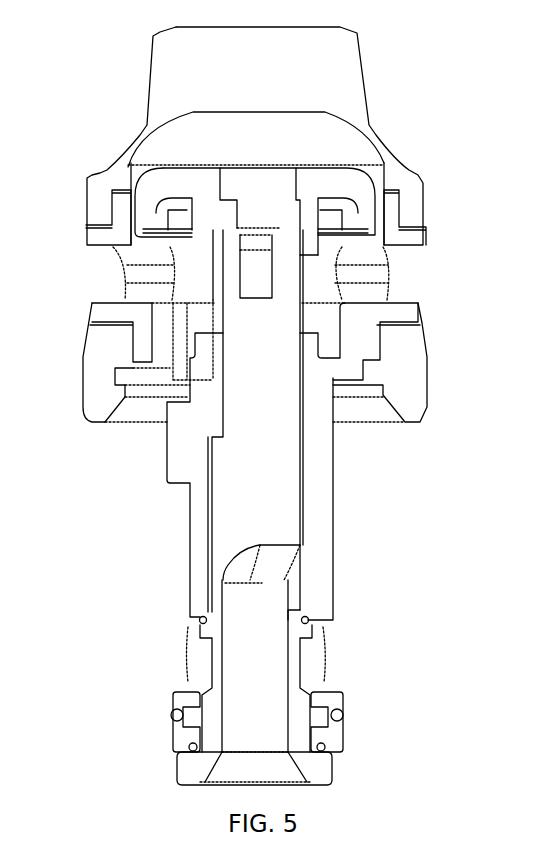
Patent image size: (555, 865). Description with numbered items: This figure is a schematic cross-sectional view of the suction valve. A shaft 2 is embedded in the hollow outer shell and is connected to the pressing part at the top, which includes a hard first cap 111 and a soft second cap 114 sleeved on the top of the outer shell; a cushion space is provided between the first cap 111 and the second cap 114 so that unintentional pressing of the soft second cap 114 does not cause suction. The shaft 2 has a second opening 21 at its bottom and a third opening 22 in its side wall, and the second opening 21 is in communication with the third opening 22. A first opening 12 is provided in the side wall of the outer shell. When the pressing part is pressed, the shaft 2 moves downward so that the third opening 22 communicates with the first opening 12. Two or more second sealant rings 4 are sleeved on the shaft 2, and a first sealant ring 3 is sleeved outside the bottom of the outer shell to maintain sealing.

The first cap 111 is at (163, 185).
The second cap 114 is at (338, 84).
The shaft 2 is at (228, 463).
The third opening 22 is at (290, 578).
The second sealant rings 4 is at (303, 619).
The first sealant ring 3 is at (330, 712).
The first opening 12 is at (332, 655).
The second opening 21 is at (247, 775).